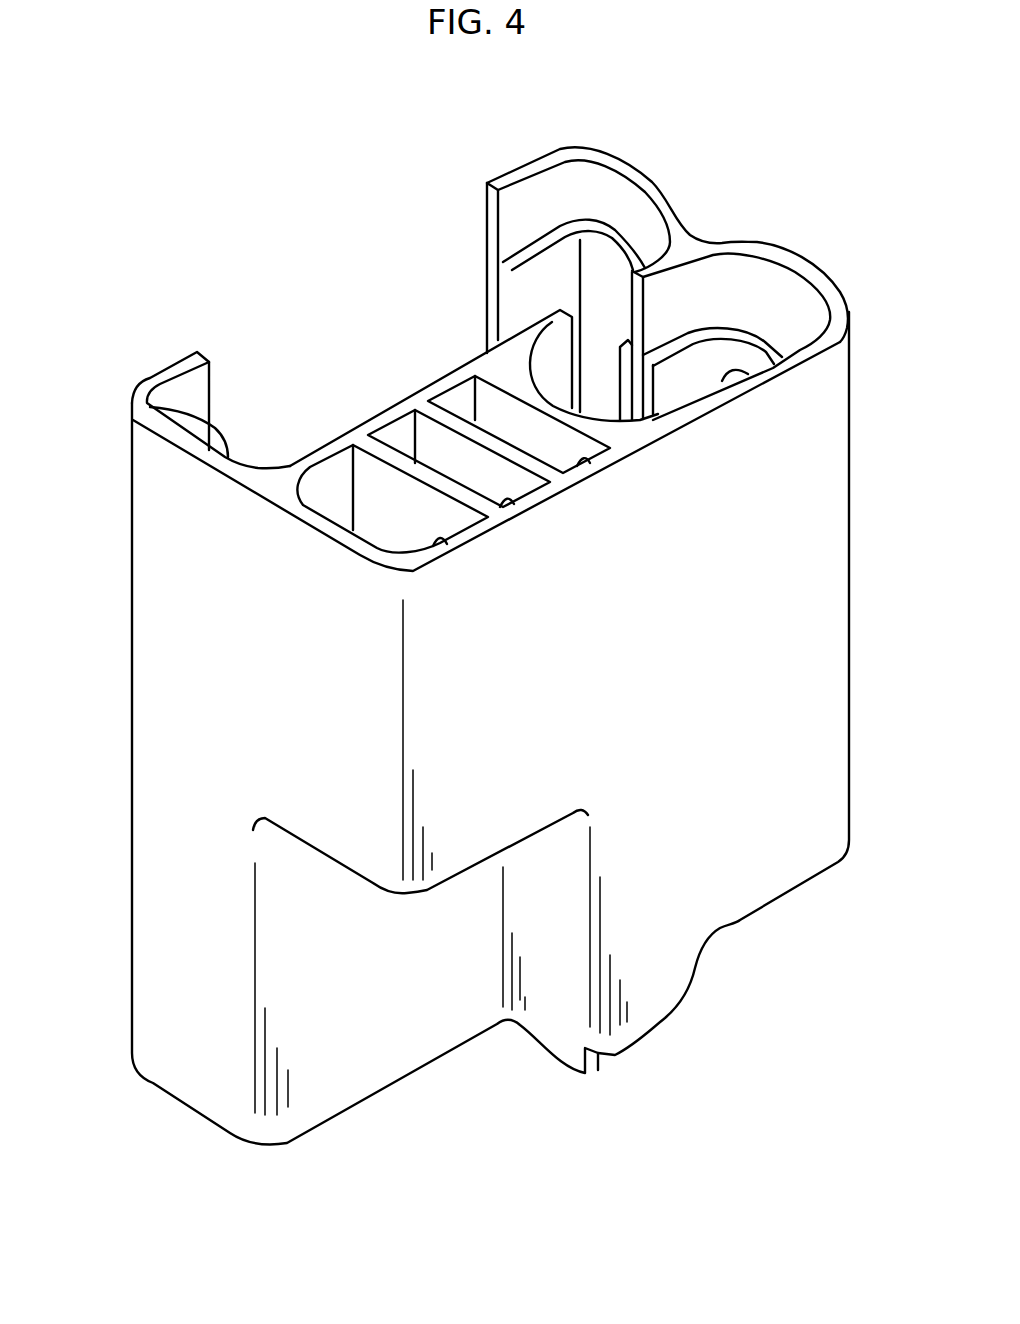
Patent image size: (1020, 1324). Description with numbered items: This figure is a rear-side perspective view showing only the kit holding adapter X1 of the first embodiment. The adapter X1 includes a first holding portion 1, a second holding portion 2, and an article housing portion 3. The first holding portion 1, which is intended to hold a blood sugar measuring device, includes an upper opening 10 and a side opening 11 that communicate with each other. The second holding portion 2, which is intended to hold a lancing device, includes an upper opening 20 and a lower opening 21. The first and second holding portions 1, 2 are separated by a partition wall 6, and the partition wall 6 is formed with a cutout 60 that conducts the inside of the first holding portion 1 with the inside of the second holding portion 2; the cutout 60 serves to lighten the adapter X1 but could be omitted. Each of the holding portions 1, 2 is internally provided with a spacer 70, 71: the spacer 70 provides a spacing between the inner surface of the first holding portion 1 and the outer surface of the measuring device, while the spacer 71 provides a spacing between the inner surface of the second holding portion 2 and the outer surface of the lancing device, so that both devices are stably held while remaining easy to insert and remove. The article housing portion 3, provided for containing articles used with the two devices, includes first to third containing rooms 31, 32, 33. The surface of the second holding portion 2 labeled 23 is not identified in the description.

The kit holding adapter X1 is at (284, 236).
The first holding portion 1 is at (333, 774).
The second holding portion 2 is at (521, 588).
The article housing portion 3 is at (379, 876).
The partition wall 6 is at (526, 322).
The upper opening 10 is at (150, 403).
The side opening 11 is at (486, 257).
The upper opening 20 is at (748, 374).
The lower opening 21 is at (763, 908).
The front side wall 23 is at (818, 697).
The first containing room 31 is at (590, 463).
The second containing room 32 is at (513, 504).
The third containing room 33 is at (447, 544).
The cutout 60 is at (633, 321).
The spacer 70 is at (541, 262).
The spacer 71 is at (700, 358).